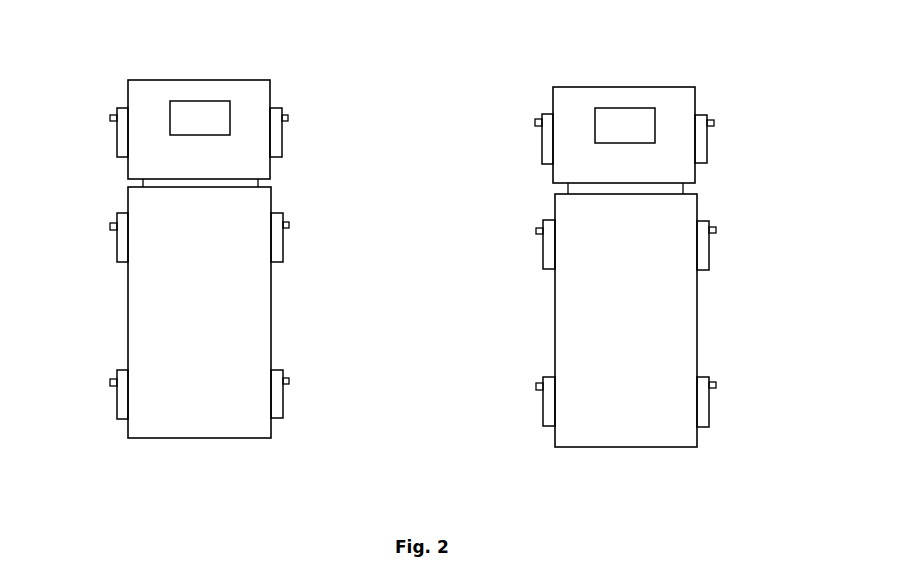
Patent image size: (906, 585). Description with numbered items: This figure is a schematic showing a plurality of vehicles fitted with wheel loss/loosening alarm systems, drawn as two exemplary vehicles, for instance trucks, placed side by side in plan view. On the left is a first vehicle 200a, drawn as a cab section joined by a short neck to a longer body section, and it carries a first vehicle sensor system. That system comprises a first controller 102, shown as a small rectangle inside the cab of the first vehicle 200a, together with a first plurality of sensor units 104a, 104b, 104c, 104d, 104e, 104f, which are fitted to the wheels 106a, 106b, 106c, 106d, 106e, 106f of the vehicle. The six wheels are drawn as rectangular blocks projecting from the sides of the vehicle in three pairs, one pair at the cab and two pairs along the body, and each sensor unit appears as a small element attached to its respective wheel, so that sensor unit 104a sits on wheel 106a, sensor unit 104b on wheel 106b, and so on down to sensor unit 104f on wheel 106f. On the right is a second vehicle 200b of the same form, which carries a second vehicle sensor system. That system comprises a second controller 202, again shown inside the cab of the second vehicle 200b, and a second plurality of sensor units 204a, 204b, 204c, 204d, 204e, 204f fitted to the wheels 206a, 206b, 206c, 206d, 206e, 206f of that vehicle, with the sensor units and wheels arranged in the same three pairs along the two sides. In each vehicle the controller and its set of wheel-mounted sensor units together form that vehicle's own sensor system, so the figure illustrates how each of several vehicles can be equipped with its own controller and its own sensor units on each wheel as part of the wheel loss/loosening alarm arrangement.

The first controller 102 is at (222, 100).
The sensor unit 104a is at (79, 98).
The sensor unit 104b is at (325, 101).
The sensor unit 104c is at (79, 209).
The sensor unit 104d is at (322, 207).
The sensor unit 104e is at (76, 366).
The sensor unit 104f is at (319, 361).
The wheel 106a is at (89, 132).
The wheel 106b is at (313, 132).
The wheel 106c is at (89, 237).
The wheel 106d is at (309, 237).
The wheel 106e is at (85, 394).
The wheel 106f is at (306, 393).
The first vehicle 200a is at (199, 259).
The second controller 202 is at (652, 108).
The sensor unit 204a is at (504, 107).
The sensor unit 204b is at (747, 104).
The sensor unit 204c is at (505, 215).
The sensor unit 204d is at (746, 211).
The sensor unit 204e is at (502, 370).
The sensor unit 204f is at (741, 366).
The wheel 206a is at (514, 139).
The wheel 206b is at (738, 139).
The wheel 206c is at (515, 244).
The wheel 206d is at (734, 245).
The wheel 206e is at (511, 401).
The wheel 206f is at (732, 402).
The second vehicle 200b is at (625, 267).